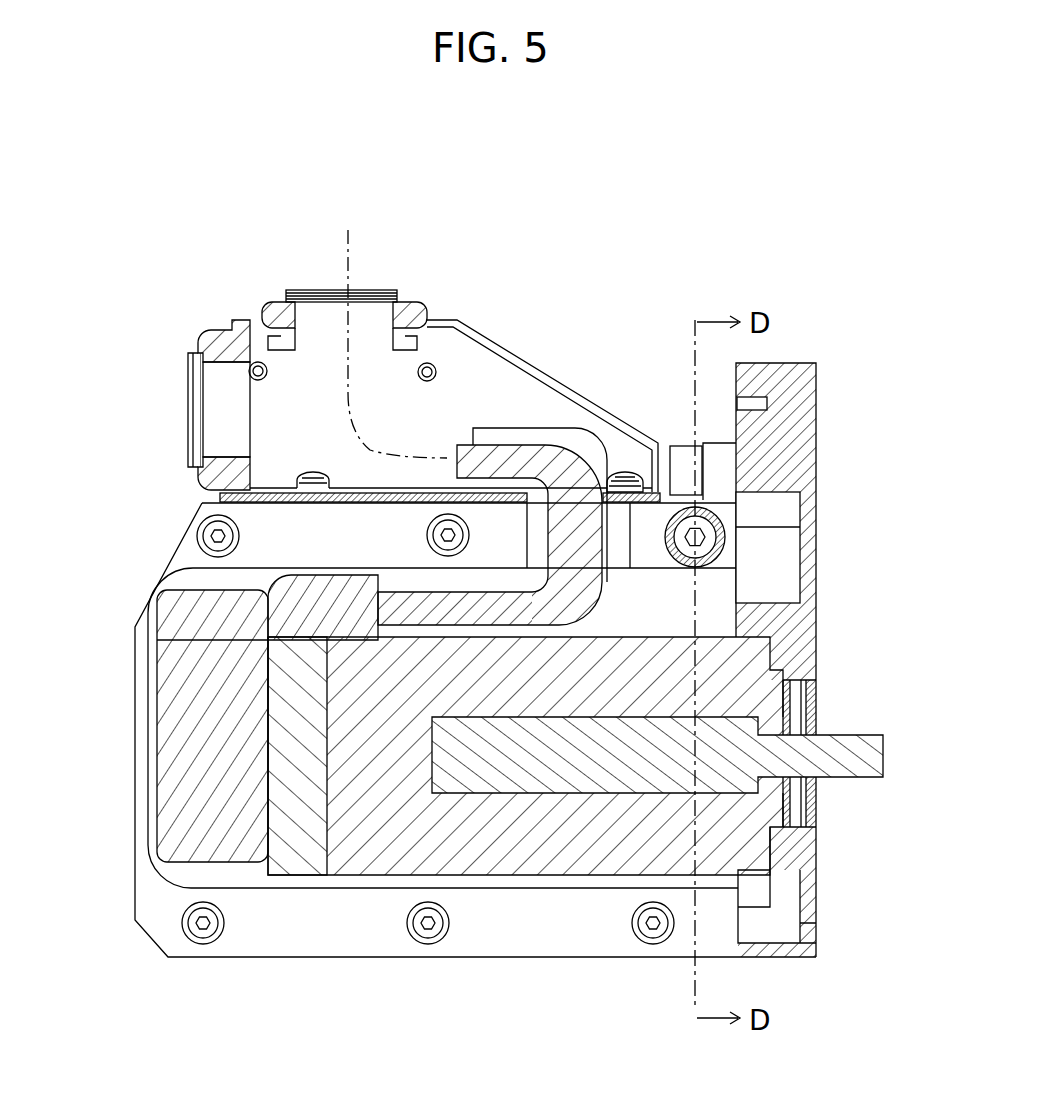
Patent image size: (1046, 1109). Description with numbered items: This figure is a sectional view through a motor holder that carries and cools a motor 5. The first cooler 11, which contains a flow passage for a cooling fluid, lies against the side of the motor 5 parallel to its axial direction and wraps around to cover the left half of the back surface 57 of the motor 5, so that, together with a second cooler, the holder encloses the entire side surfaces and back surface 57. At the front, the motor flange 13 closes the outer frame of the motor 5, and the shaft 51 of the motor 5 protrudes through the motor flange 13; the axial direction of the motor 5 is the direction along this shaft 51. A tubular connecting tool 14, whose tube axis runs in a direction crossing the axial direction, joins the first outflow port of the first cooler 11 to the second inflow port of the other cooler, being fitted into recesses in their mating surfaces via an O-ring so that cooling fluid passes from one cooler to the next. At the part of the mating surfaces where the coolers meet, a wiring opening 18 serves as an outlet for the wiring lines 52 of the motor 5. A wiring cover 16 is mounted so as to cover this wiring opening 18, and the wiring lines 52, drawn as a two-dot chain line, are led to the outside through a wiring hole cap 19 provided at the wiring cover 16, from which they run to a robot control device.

The motor 5 is at (627, 828).
The first cooler 11 is at (282, 933).
The motor flange 13 is at (812, 412).
The connecting tool 14 is at (722, 549).
The wiring cover 16 is at (498, 340).
The wiring opening 18 is at (612, 488).
The wiring hole cap 19 is at (398, 297).
The shaft 51 is at (867, 738).
The wiring lines 52 is at (563, 442).
The back surface 57 is at (157, 752).